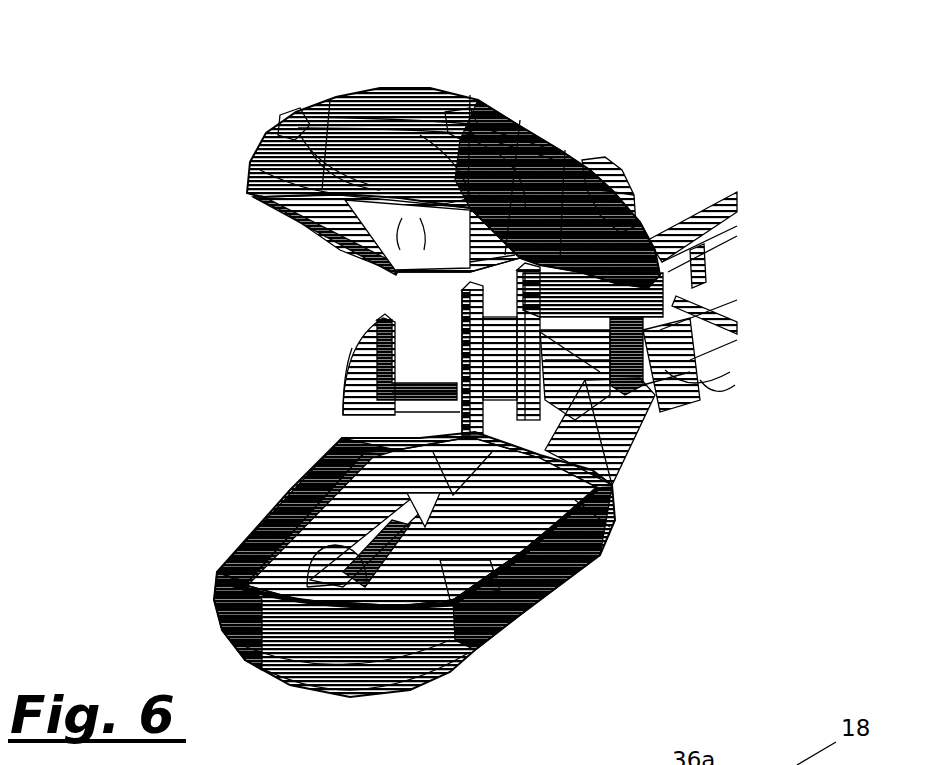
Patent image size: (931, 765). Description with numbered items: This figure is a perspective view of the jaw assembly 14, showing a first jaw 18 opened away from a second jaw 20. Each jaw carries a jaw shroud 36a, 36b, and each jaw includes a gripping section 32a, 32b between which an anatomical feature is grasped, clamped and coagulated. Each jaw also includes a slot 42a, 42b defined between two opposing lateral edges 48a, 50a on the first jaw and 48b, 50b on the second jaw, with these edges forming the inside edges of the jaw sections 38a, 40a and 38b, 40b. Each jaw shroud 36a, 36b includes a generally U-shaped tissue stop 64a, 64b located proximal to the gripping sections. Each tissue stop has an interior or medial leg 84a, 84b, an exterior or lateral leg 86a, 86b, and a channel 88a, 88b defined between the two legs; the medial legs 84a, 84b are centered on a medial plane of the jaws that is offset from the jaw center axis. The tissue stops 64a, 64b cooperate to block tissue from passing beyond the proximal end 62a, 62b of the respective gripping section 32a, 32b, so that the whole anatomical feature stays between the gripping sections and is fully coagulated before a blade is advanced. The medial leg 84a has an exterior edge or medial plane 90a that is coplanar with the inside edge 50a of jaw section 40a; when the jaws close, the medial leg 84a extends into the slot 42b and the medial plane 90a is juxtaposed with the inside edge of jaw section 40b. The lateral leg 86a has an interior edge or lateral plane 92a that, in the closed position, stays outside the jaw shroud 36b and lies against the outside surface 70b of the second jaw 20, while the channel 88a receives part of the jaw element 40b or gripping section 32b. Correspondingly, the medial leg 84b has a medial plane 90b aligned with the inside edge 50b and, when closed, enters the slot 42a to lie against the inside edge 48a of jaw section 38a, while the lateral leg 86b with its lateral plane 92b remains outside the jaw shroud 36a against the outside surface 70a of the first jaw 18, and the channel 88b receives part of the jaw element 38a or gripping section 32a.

The jaw assembly 14 is at (465, 385).
The first jaw 18 is at (422, 168).
The second jaw 20 is at (427, 567).
The gripping section 32a is at (304, 228).
The gripping section 32b is at (383, 567).
The jaw shroud 36a is at (408, 118).
The jaw shroud 36b is at (327, 685).
The jaw section 38a is at (304, 228).
The jaw section 38b is at (383, 567).
The jaw section 40a is at (527, 260).
The jaw section 40b is at (576, 568).
The slot 42a is at (430, 252).
The slot 42b is at (365, 545).
The lateral edge 48a is at (393, 257).
The lateral edge 48b is at (470, 573).
The lateral edge 50a is at (600, 224).
The lateral edge 50b is at (440, 528).
The proximal end 62a is at (427, 268).
The proximal end 62b is at (397, 451).
The tissue stop 64a is at (630, 350).
The tissue stop 64b is at (288, 366).
The outside surface 70a is at (367, 250).
The outside surface 70b is at (513, 587).
The medial leg 84a is at (662, 405).
The medial leg 84b is at (351, 358).
The lateral leg 86a is at (660, 330).
The lateral leg 86b is at (347, 385).
The channel 88a is at (560, 340).
The channel 88b is at (395, 412).
The medial plane 90a is at (520, 398).
The medial plane 90b is at (462, 345).
The lateral plane 92a is at (575, 350).
The lateral plane 92b is at (327, 368).